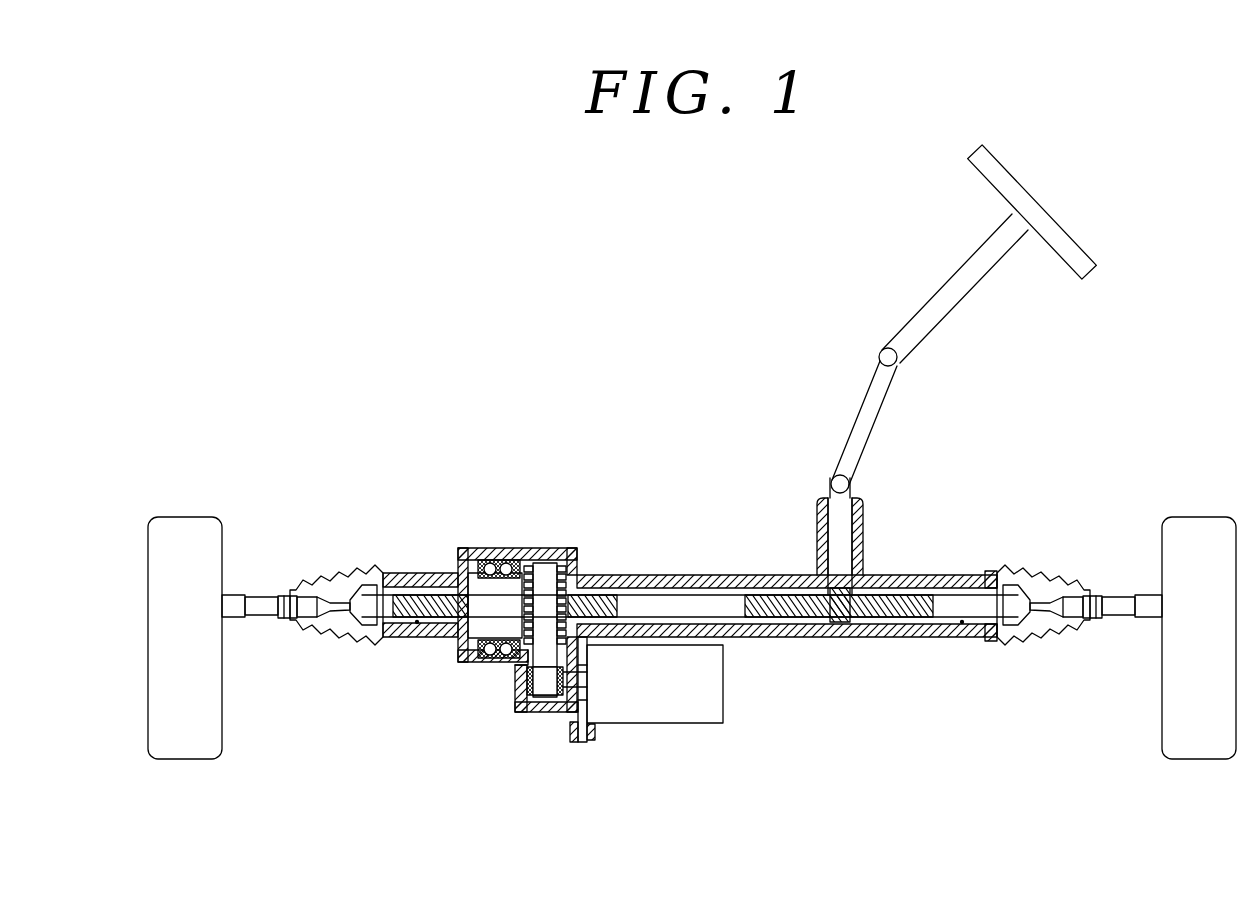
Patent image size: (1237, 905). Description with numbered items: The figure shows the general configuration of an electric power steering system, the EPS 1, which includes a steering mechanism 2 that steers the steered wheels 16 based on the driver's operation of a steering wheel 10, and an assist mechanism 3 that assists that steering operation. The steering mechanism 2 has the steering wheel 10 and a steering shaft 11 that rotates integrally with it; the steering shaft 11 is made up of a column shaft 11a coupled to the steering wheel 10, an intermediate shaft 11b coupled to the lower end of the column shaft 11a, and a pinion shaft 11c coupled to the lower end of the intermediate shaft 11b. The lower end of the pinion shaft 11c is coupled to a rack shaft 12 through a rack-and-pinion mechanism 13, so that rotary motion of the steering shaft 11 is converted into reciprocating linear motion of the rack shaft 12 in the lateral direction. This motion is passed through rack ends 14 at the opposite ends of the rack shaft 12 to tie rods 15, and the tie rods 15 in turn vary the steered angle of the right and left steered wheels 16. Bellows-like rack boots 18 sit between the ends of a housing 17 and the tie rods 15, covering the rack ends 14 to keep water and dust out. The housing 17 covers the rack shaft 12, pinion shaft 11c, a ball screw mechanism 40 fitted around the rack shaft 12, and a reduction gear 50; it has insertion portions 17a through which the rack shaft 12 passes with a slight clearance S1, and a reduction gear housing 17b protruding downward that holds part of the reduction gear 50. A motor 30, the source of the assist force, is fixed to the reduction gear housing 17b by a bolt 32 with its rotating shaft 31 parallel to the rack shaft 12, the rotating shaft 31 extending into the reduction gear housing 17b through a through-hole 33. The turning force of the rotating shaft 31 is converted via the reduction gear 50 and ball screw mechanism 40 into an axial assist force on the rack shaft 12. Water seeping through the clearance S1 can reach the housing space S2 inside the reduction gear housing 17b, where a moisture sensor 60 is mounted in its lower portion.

The EPS 1 is at (676, 276).
The steering mechanism 2 is at (1052, 349).
The assist mechanism 3 is at (594, 529).
The steering wheel 10 is at (1022, 183).
The steering shaft 11 is at (870, 374).
The column shaft 11a is at (908, 288).
The intermediate shaft 11b is at (855, 417).
The pinion shaft 11c is at (835, 535).
The rack shaft 12 is at (740, 638).
The rack-and-pinion mechanism 13 is at (835, 623).
The rack end 14 is at (346, 645).
The tie rod 15 is at (283, 617).
The steered wheel 16 is at (186, 517).
The housing 17 is at (690, 607).
The insertion portion 17a is at (420, 573).
The reduction gear housing 17b is at (520, 712).
The rack boot 18 is at (345, 577).
The motor 30 is at (646, 723).
The rotating shaft 31 is at (580, 702).
The bolt 32 is at (593, 732).
The through-hole 33 is at (580, 665).
The ball screw mechanism 40 is at (460, 648).
The reduction gear 50 is at (527, 660).
The moisture sensor 60 is at (543, 713).
The clearance S1 is at (417, 625).
The housing space S2 is at (517, 685).